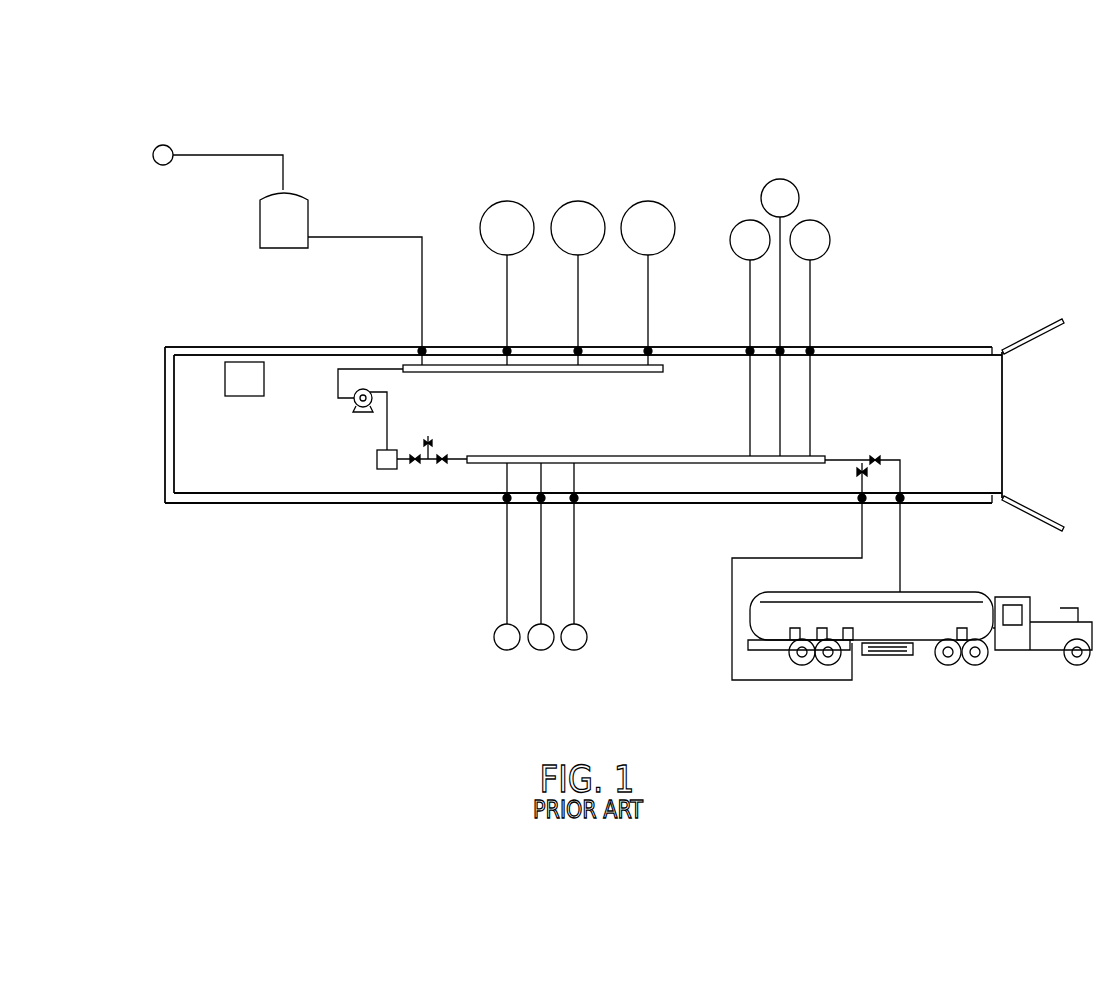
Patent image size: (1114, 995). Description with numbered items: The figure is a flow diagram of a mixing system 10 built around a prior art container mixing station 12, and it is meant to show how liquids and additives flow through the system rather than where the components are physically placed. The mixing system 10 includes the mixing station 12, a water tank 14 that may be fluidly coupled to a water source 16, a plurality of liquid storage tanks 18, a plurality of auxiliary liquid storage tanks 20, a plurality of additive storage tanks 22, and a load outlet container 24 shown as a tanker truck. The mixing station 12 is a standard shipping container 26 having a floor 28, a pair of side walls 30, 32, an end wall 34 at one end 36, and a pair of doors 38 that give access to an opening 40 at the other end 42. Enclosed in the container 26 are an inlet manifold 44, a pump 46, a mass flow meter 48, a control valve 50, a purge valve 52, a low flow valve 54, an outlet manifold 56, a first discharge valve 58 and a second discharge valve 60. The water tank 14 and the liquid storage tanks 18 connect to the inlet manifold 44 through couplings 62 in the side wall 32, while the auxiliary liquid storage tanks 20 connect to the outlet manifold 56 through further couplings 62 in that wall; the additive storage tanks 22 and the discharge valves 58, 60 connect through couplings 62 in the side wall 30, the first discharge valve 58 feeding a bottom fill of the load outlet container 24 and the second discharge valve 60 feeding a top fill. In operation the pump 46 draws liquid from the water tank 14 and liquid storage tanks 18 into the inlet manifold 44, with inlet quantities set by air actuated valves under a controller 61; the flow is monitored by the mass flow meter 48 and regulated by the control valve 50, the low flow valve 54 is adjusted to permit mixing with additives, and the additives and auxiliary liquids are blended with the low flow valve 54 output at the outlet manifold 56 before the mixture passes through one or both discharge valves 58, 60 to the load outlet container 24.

The mixing system 10 is at (172, 98).
The container mixing station 12 is at (344, 583).
The water tank 14 is at (305, 198).
The water source 16 is at (163, 164).
The liquid storage tanks 18 is at (546, 181).
The auxiliary liquid storage tanks 20 is at (746, 181).
The additive storage tanks 22 is at (492, 638).
The load outlet container 24 is at (923, 663).
The shipping container 26 is at (262, 507).
The floor 28 is at (204, 475).
The side wall 30 is at (690, 502).
The side wall 32 is at (870, 352).
The end wall 34 is at (163, 432).
The end 36 is at (193, 338).
The doors 38 is at (1036, 338).
The opening 40 is at (993, 428).
The end 42 is at (967, 506).
The inlet manifold 44 is at (620, 374).
The pump 46 is at (354, 400).
The mass flow meter 48 is at (376, 460).
The control valve 50 is at (416, 465).
The purge valve 52 is at (440, 440).
The low flow valve 54 is at (442, 465).
The outlet manifold 56 is at (690, 456).
The first discharge valve 58 is at (855, 469).
The second discharge valve 60 is at (876, 458).
The controller 61 is at (247, 397).
The coupling 62 is at (410, 345).